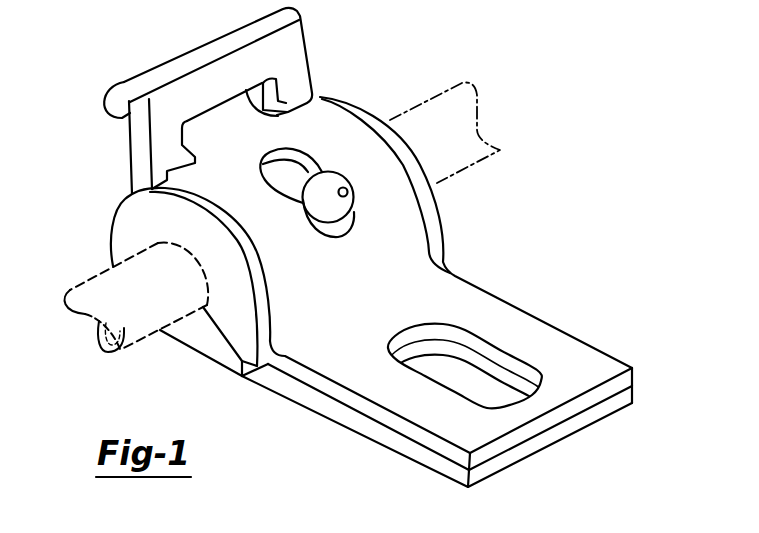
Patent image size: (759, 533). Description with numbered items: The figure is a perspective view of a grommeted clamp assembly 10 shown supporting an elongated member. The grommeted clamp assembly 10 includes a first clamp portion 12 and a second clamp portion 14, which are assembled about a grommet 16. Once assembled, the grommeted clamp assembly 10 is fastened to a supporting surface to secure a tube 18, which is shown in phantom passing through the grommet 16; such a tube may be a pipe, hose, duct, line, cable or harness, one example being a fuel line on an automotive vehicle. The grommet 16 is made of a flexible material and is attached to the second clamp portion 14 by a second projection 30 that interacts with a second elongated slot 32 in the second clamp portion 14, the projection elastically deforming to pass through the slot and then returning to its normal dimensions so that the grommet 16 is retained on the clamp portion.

The grommeted clamp assembly 10 is at (100, 77).
The first clamp portion 12 is at (425, 455).
The second clamp portion 14 is at (588, 360).
The grommet 16 is at (212, 340).
The tube 18 is at (88, 293).
The second projection 30 is at (352, 192).
The second elongated slot 32 is at (315, 167).